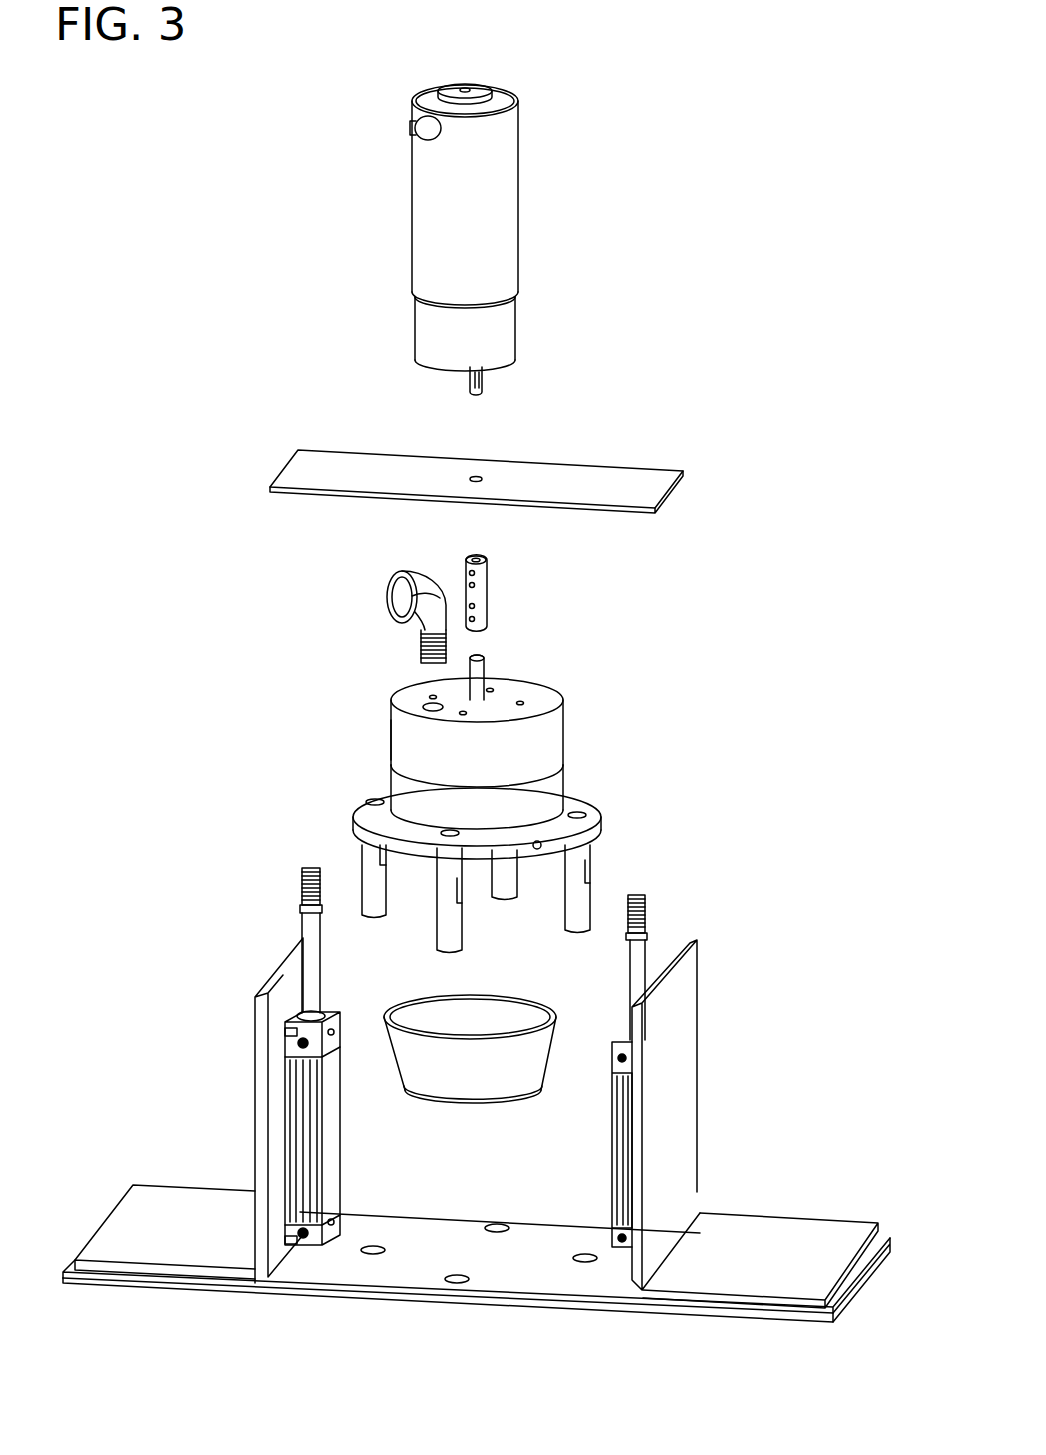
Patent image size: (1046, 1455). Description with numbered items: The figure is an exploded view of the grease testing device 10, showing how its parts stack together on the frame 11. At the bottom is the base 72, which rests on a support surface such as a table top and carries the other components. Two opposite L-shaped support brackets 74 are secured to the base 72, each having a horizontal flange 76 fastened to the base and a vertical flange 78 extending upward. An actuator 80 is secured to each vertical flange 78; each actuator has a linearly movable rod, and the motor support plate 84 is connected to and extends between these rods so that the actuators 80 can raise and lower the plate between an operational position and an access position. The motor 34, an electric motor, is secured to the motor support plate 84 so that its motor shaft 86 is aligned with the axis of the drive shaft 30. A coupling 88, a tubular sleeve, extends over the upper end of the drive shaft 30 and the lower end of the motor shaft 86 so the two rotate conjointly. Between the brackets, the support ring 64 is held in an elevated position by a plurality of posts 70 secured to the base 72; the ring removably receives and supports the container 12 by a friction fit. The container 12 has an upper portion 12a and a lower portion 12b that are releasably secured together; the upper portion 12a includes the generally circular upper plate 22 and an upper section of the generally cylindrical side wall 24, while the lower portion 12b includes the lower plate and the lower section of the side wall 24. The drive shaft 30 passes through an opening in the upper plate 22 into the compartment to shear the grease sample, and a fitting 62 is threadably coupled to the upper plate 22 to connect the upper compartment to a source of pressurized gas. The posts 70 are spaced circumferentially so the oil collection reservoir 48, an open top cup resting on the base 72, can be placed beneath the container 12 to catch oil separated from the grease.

The grease testing device 10 is at (808, 183).
The frame 11 is at (765, 996).
The container 12 is at (491, 732).
The upper portion 12a is at (397, 683).
The lower portion 12b is at (568, 788).
The upper plate 22 is at (545, 690).
The side wall 24 is at (409, 739).
The drive shaft 30 is at (480, 672).
The motor 34 is at (497, 195).
The oil collection reservoir 48 is at (387, 1077).
The fitting 62 is at (435, 594).
The support ring 64 is at (597, 831).
The posts 70 is at (378, 917).
The base 72 is at (720, 1317).
The support brackets 74 is at (188, 1203).
The horizontal flange 76 is at (125, 1233).
The vertical flange 78 is at (262, 1052).
The actuators 80 is at (337, 1063).
The motor support plate 84 is at (637, 478).
The motor shaft 86 is at (486, 380).
The coupling 88 is at (495, 583).